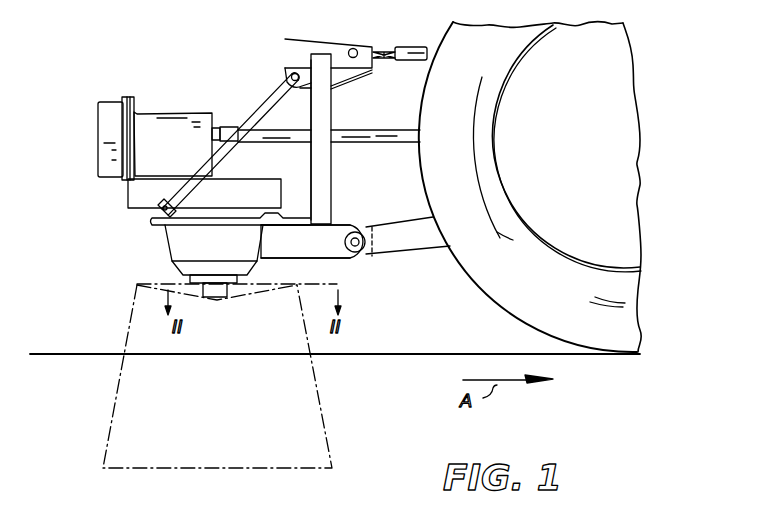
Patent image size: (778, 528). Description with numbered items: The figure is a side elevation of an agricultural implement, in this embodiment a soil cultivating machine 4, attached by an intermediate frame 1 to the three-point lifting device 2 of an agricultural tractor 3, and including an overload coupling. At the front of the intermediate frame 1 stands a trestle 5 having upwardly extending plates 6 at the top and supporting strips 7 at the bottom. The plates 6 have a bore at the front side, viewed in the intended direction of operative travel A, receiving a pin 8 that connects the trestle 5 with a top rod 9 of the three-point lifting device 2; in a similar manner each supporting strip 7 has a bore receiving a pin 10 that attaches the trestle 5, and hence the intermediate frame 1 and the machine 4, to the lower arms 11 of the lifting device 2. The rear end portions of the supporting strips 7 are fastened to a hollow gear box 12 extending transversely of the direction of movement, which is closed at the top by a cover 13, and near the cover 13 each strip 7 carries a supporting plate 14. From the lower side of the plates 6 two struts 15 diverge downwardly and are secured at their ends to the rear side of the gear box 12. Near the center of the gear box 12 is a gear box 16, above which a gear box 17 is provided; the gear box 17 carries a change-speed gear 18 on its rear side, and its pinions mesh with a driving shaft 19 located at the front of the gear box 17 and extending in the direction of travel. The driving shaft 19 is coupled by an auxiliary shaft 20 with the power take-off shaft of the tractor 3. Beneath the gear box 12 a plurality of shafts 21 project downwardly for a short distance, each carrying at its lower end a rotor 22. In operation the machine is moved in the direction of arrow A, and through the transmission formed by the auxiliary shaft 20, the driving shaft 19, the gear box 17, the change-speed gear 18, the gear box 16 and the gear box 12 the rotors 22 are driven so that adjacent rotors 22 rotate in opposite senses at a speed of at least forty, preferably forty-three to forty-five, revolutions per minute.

The intermediate frame 1 is at (334, 112).
The three-point lifting device 2 is at (415, 247).
The agricultural tractor 3 is at (500, 304).
The soil cultivating machine 4 is at (324, 428).
The trestle 5 is at (320, 192).
The upwardly extending plates 6 is at (298, 36).
The supporting strips 7 is at (328, 248).
The pin 8 is at (355, 48).
The top rod 9 is at (417, 46).
The pin 10 is at (356, 231).
The lower arms 11 is at (397, 229).
The gear box 12 is at (165, 238).
The cover 13 is at (232, 221).
The supporting plate 14 is at (280, 228).
The struts 15 is at (209, 162).
The gear box 16 is at (257, 184).
The gear box 17 is at (152, 113).
The change-speed gear 18 is at (97, 146).
The driving shaft 19 is at (220, 128).
The auxiliary shaft 20 is at (405, 120).
The shafts 21 is at (218, 294).
The rotors 22 is at (282, 290).